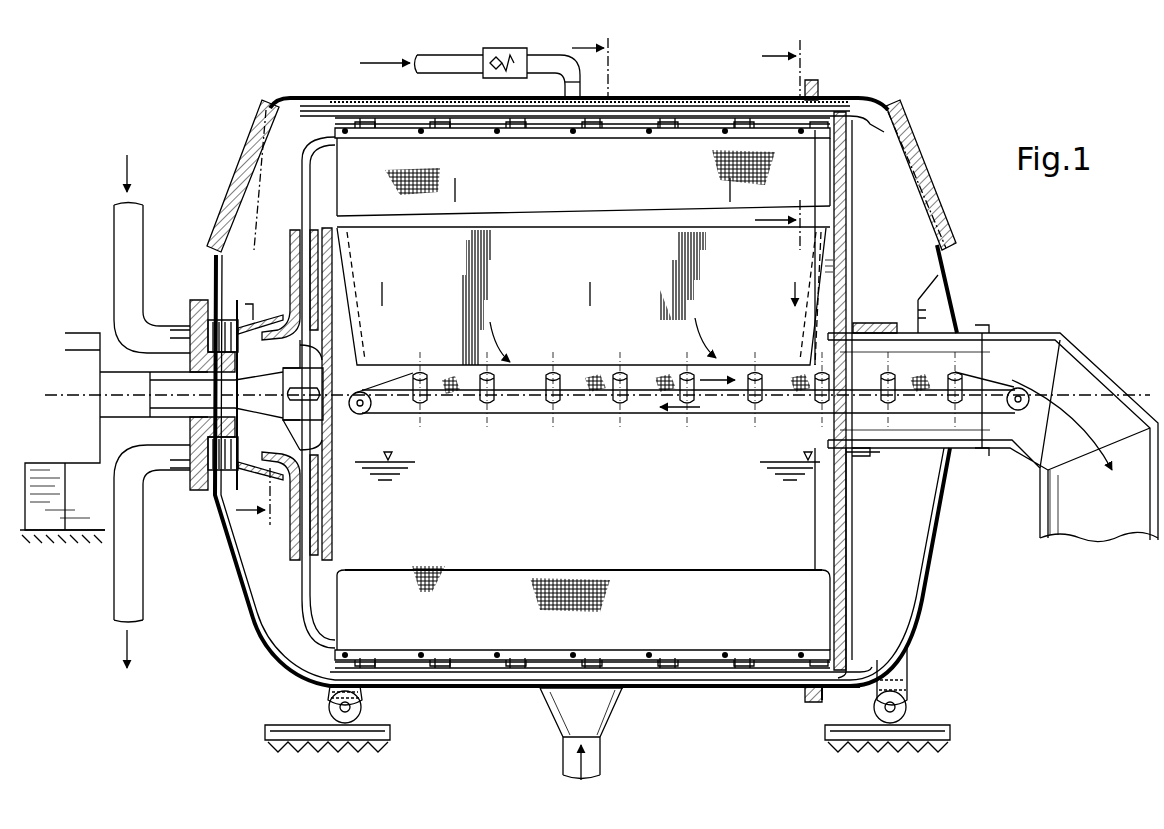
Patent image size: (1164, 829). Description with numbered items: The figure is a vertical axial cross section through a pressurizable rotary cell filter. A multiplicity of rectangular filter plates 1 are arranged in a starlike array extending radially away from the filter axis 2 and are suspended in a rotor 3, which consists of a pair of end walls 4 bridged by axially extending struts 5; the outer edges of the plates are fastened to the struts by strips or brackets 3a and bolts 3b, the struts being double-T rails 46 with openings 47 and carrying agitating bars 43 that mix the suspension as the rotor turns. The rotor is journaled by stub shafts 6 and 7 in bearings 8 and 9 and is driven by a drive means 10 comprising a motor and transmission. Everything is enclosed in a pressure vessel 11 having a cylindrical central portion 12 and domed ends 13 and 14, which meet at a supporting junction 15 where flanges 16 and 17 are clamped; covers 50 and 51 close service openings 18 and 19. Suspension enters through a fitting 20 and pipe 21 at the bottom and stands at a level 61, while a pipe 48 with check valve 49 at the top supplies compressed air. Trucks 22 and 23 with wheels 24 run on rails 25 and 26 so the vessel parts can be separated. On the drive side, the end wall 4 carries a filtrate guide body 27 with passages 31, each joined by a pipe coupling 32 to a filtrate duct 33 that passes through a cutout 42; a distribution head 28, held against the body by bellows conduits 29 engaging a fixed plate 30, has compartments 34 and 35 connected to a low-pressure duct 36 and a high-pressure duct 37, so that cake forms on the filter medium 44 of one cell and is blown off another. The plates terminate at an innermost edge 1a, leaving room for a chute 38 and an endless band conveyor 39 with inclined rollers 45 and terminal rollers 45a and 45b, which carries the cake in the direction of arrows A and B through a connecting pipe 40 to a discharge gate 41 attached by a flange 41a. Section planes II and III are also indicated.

The filter plate 1 is at (583, 394).
The radially innermost edge 1a is at (487, 568).
The filter axis 2 is at (58, 410).
The rotor 3 is at (853, 250).
The strips or brackets 3a is at (568, 650).
The bolts 3b is at (500, 652).
The end wall 4 is at (815, 518).
The strut 5 is at (632, 124).
The stub shaft 6 is at (332, 380).
The stub shaft 7 is at (870, 460).
The bearing 8 is at (225, 410).
The bearing 9 is at (878, 323).
The drive means 10 is at (82, 350).
The pressure vessel 11 is at (732, 88).
The cylindrical central portion 12 is at (697, 96).
The domed end 13 is at (250, 630).
The domed end 14 is at (935, 580).
The supporting junction 15 is at (812, 498).
The flange 16 is at (808, 705).
The flange 17 is at (824, 695).
The manhole or service opening 18 is at (238, 218).
The manhole or service opening 19 is at (912, 186).
The fitting 20 is at (612, 692).
The pipe 21 is at (563, 755).
The carriage or truck 22 is at (330, 700).
The truck 23 is at (908, 660).
The wheels 24 is at (362, 706).
The rail 25 is at (268, 735).
The rail 26 is at (950, 735).
The filtrate guide body 27 is at (332, 350).
The control head or distribution head 28 is at (258, 470).
The yieldable conduits 29 is at (190, 330).
The fixed plate 30 is at (200, 300).
The passage 31 is at (296, 312).
The pipe coupling 32 is at (332, 246).
The filtrate duct 33 is at (304, 180).
The compartment 34 is at (262, 418).
The compartment 35 is at (248, 330).
The low-pressure duct 36 is at (114, 596).
The high-pressure duct 37 is at (114, 230).
The chute or apron 38 is at (581, 296).
The endless band conveyor 39 is at (495, 415).
The connecting pipe 40 is at (915, 458).
The discharge gate 41 is at (1100, 522).
The flange 41a is at (982, 456).
The cutout 42 is at (842, 162).
The agitating bars 43 is at (858, 110).
The filter medium 44 is at (636, 210).
The rollers 45 is at (610, 402).
The terminal roller 45a is at (365, 416).
The terminal roller 45b is at (1026, 408).
The double-T rail 46 is at (631, 122).
The openings 47 is at (390, 120).
The pipe 48 is at (432, 54).
The check valve 49 is at (518, 50).
The cover 50 is at (245, 165).
The cover 51 is at (915, 163).
The level of the suspension 61 is at (392, 460).
The arrow A is at (708, 338).
The arrow B is at (1062, 425).
The section line II is at (429, 281).
The section line III is at (783, 137).